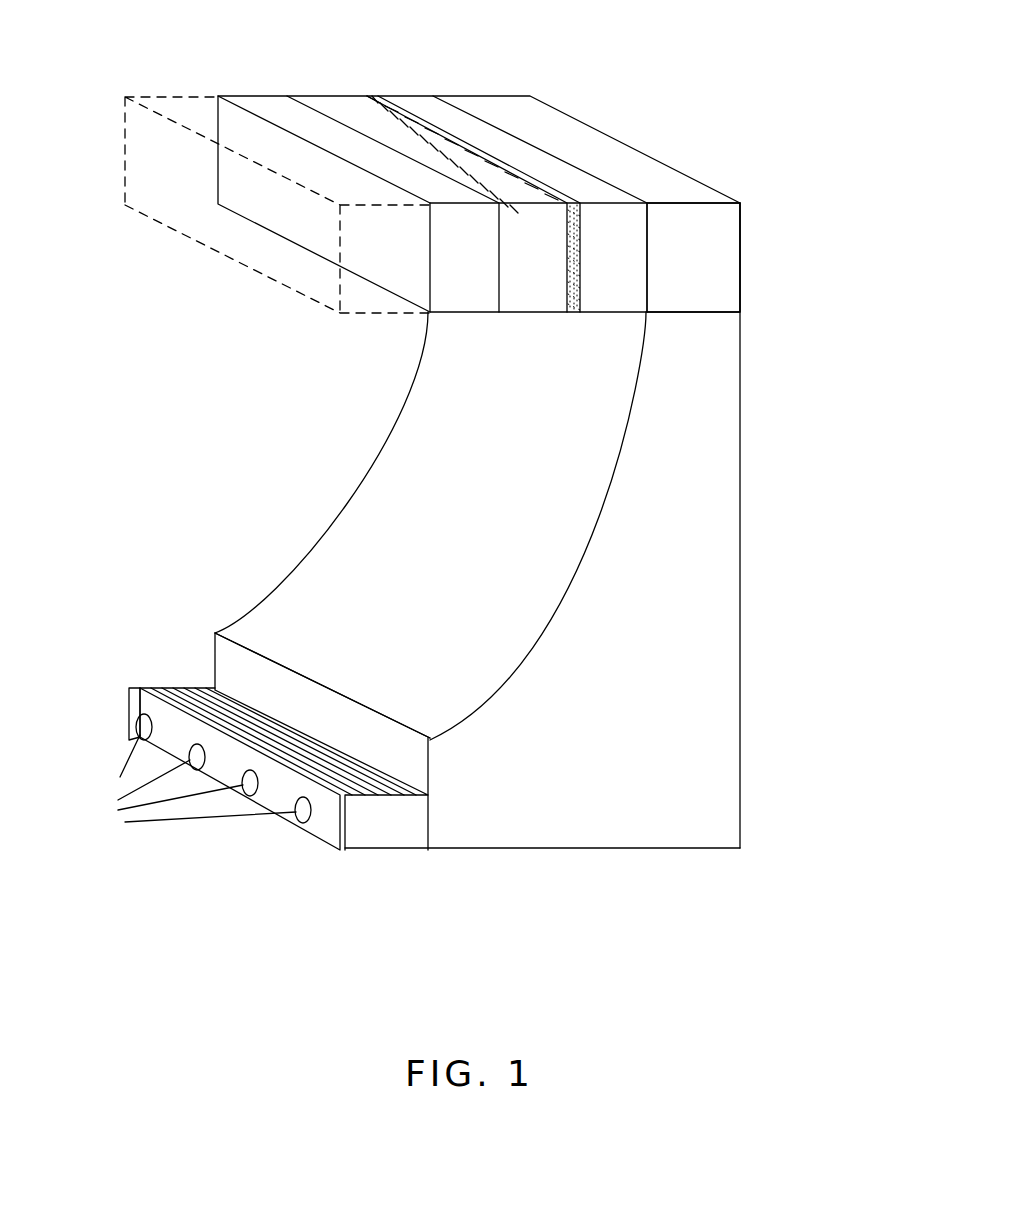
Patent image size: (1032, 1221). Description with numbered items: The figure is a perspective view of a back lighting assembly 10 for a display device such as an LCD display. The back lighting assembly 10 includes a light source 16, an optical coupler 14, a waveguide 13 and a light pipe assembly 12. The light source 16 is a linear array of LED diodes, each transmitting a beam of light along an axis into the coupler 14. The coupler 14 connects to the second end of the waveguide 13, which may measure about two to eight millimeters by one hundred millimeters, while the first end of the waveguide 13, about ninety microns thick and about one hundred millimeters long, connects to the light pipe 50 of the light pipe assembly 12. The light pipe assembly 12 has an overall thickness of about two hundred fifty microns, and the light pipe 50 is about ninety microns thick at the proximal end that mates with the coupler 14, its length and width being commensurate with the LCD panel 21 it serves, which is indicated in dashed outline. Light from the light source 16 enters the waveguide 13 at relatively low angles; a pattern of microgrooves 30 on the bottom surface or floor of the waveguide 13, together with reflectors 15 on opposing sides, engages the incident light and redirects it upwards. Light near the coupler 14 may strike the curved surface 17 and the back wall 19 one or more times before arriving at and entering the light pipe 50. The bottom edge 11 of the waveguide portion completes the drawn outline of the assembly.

The back lighting assembly 10 is at (307, 971).
The bottom edge of light guide 11 is at (680, 850).
The light pipe assembly 12 is at (528, 84).
The waveguide 13 is at (670, 542).
The optical coupler 14 is at (398, 850).
The reflectors 15 is at (363, 745).
The light source 16 is at (265, 848).
The curved surface 17 is at (360, 480).
The back wall 19 is at (745, 450).
The LCD panel 21 is at (137, 93).
The pattern of microgrooves 30 is at (520, 815).
The light pipe 50 is at (705, 247).